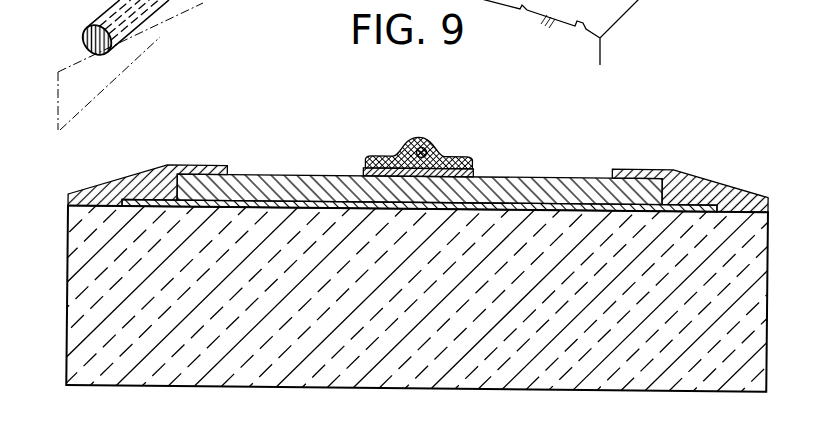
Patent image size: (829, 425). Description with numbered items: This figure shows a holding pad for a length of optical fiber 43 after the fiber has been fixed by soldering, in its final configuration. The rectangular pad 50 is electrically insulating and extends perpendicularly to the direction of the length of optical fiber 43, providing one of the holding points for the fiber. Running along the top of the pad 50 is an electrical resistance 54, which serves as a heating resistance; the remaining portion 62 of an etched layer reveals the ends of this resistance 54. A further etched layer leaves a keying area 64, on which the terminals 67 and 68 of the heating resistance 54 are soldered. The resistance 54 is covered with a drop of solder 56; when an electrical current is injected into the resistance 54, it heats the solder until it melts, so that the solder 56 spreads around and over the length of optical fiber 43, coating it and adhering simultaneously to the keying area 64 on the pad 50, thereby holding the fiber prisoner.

The length of optical fiber 43 is at (410, 142).
The rectangular pad 50 is at (65, 224).
The electrical resistance 54 is at (271, 198).
The drop of solder 56 is at (437, 144).
The remaining portion 62 is at (240, 184).
The keying area 64 is at (477, 168).
The terminal 67 is at (143, 171).
The terminal 68 is at (700, 176).